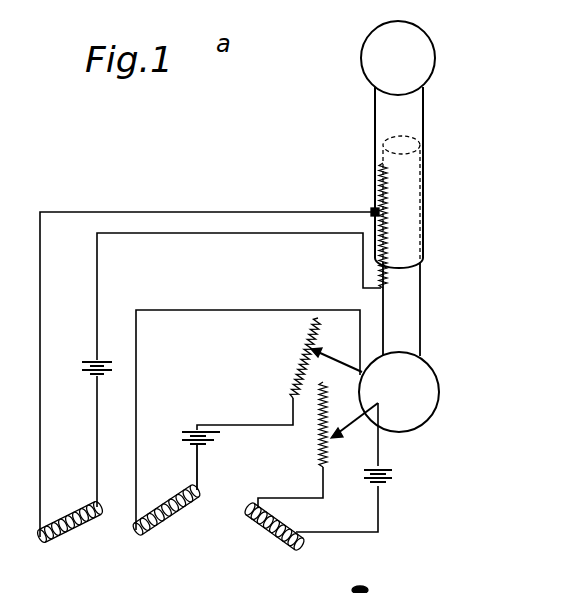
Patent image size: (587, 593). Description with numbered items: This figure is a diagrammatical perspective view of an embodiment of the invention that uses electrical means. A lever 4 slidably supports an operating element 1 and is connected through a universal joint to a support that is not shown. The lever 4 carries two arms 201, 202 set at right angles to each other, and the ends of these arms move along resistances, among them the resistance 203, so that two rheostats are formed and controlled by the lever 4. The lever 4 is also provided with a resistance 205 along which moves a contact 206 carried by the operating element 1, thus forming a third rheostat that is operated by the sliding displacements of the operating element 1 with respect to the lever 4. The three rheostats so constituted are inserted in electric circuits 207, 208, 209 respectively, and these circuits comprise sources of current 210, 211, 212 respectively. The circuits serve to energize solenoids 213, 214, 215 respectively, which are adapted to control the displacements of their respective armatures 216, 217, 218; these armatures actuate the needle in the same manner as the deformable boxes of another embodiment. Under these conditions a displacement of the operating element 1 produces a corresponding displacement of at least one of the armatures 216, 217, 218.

The operating element 1 is at (425, 62).
The lever 4 is at (403, 317).
The resistance 205 is at (388, 238).
The contact 206 is at (373, 208).
The electric circuit 209 is at (99, 275).
The source of current 212 is at (86, 365).
The arm 202 is at (332, 361).
The resistance 203 is at (298, 351).
The electric circuit 208 is at (257, 416).
The source of current 211 is at (180, 434).
The arm 201 is at (352, 425).
The electric circuit 207 is at (381, 456).
The source of current 210 is at (386, 484).
The solenoid 213 is at (275, 519).
The armature 216 is at (306, 546).
The solenoid 214 is at (157, 510).
The armature 217 is at (137, 535).
The solenoid 215 is at (62, 520).
The armature 218 is at (40, 542).